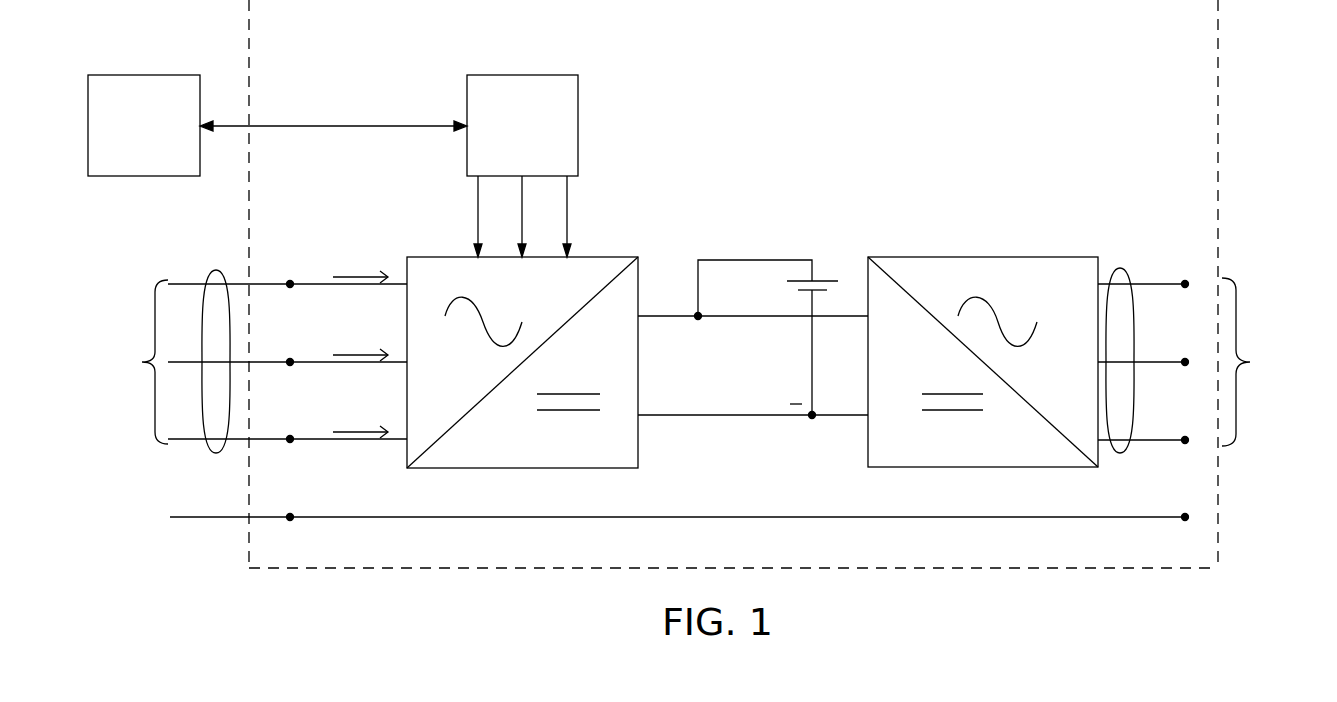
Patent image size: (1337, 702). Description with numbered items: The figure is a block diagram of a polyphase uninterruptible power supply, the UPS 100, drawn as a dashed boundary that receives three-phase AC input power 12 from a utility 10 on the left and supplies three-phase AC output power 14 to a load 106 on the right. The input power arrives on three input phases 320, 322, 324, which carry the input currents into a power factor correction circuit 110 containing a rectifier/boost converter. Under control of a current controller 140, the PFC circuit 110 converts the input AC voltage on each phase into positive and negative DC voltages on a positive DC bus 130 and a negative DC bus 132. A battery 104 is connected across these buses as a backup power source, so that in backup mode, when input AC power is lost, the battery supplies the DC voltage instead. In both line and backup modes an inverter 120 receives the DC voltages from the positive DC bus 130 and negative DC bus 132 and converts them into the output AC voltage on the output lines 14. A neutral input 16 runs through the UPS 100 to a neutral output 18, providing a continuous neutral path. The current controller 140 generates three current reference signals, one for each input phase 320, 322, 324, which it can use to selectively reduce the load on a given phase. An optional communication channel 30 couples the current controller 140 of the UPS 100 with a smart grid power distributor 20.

The utility 10 is at (107, 385).
The three-phase AC input power 12 is at (214, 270).
The three-phase AC output power 14 is at (1121, 270).
The neutral input 16 is at (213, 517).
The neutral output 18 is at (1117, 517).
The smart grid power distributor 20 is at (130, 75).
The communication channel 30 is at (305, 125).
The UPS 100 is at (1090, 568).
The battery 104 is at (825, 283).
The load 106 is at (1202, 354).
The power factor correction circuit 110 is at (600, 257).
The inverter 120 is at (995, 257).
The positive DC bus 130 is at (667, 316).
The negative DC bus 132 is at (670, 415).
The current controller 140 is at (507, 75).
The first input phase 320 is at (270, 283).
The second input phase 322 is at (270, 361).
The third input phase 324 is at (270, 438).